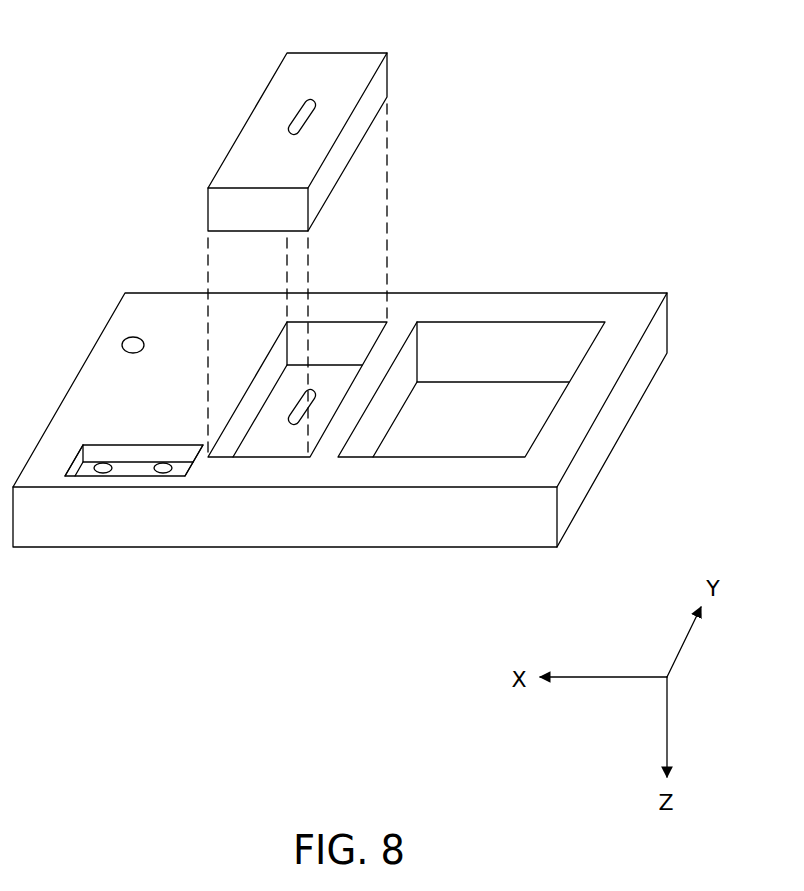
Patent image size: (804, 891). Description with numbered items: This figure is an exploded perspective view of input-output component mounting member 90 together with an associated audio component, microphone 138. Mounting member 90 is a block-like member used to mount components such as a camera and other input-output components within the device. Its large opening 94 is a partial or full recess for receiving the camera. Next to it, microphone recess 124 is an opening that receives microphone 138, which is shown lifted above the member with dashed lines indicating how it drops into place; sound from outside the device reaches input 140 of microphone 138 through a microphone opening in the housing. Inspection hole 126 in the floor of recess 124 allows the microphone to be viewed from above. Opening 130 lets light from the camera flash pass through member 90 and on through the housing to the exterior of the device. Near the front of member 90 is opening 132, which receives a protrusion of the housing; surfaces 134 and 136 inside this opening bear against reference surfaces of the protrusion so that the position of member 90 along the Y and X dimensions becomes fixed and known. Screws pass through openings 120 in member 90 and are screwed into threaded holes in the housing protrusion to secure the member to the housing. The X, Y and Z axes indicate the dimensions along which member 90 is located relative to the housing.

The input-output component mounting member 90 is at (660, 335).
The opening 94 is at (507, 408).
The microphone recess 124 is at (341, 376).
The inspection hole 126 is at (288, 408).
The opening 130 is at (135, 337).
The opening 132 is at (131, 470).
The openings 120 is at (102, 463).
The surface 134 is at (100, 477).
The surface 136 is at (193, 469).
The microphone 138 is at (348, 63).
The input 140 is at (312, 117).